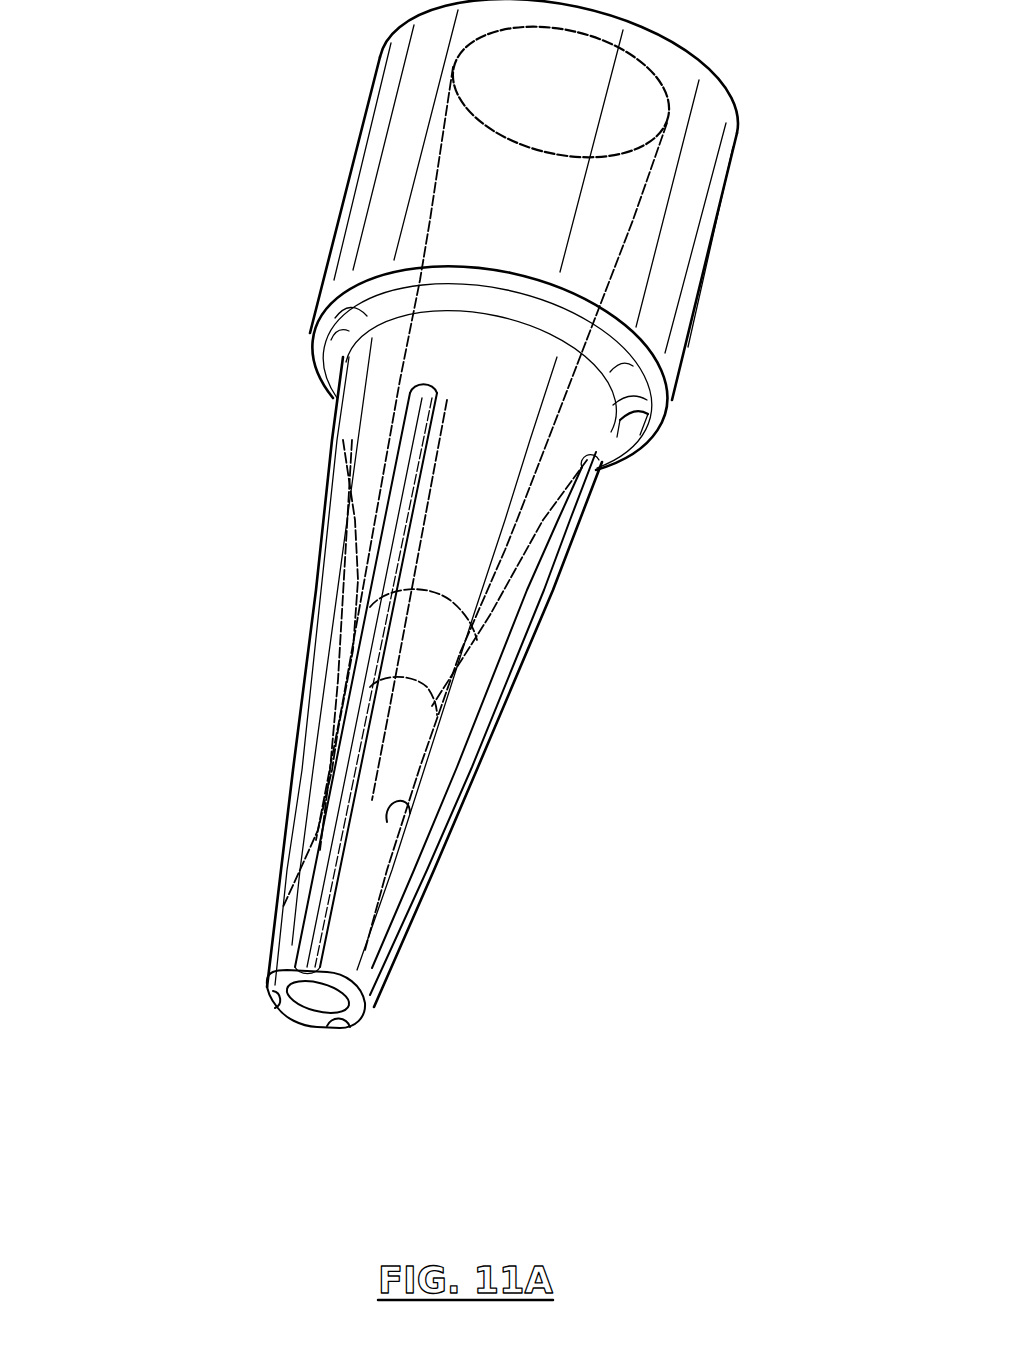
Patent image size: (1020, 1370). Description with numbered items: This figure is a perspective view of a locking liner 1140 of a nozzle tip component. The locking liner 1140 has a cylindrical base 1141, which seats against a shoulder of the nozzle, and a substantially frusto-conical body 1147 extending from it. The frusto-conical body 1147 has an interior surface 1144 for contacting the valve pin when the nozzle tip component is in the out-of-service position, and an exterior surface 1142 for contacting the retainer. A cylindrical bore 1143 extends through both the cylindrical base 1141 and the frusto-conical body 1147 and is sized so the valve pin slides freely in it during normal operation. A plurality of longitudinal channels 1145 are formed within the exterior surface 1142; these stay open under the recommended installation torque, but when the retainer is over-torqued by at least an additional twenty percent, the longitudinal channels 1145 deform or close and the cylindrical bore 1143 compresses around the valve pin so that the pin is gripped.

The locking liner 1140 is at (379, 597).
The cylindrical base 1141 is at (320, 207).
The exterior surface 1142 is at (315, 679).
The cylindrical bore 1143 is at (397, 750).
The interior surface 1144 is at (405, 820).
The longitudinal channels 1145 is at (325, 887).
The frusto-conical body 1147 is at (293, 744).